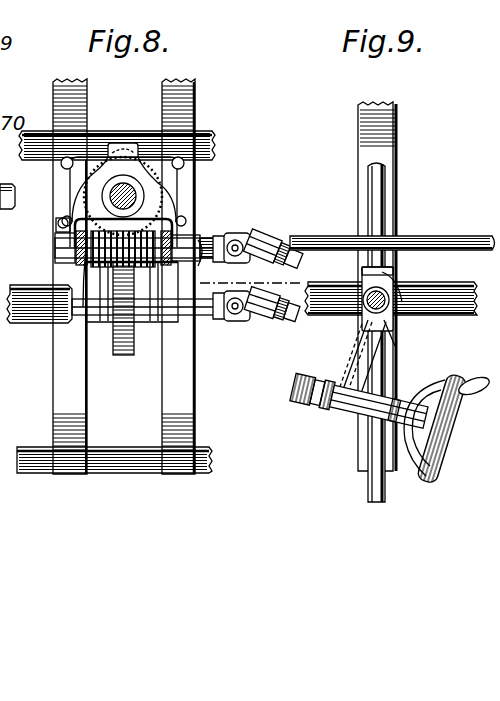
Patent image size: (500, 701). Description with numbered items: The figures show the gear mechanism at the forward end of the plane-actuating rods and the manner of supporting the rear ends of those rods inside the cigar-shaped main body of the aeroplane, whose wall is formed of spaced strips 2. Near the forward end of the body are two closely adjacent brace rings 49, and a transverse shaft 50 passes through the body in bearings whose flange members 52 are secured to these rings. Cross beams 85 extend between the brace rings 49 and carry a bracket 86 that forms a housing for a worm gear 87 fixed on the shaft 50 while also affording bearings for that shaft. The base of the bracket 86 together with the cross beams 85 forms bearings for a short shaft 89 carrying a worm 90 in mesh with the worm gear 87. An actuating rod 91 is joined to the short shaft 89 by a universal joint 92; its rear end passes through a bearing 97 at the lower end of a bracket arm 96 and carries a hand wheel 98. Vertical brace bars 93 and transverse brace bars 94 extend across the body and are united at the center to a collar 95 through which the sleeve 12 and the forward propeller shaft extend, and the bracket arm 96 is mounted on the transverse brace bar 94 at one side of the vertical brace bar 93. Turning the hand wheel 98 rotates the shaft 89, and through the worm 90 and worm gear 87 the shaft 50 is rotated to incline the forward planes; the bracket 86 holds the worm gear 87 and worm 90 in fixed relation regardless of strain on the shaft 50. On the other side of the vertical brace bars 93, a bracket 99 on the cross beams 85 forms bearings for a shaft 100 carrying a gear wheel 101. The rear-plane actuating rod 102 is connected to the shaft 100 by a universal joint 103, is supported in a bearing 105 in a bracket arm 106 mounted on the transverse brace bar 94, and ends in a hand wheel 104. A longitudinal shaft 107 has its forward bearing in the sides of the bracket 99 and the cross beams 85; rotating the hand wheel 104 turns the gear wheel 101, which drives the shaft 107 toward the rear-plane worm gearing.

In FIG. 8, the strips 2 is at (212, 136).
In FIG. 8, the sleeve 12 is at (36, 308).
In FIG. 9, the sleeve 12 is at (391, 299).
In FIG. 8, the brace rings 49 is at (162, 94).
In FIG. 8, the shaft 50 is at (172, 196).
In FIG. 8, the flange members 52 is at (196, 176).
In FIG. 8, the cross beams 85 is at (182, 236).
In FIG. 8, the bracket 86 is at (150, 212).
In FIG. 8, the worm gear 87 is at (96, 183).
In FIG. 8, the short shaft 89 is at (198, 256).
In FIG. 8, the worm 90 is at (58, 223).
In FIG. 9, the actuating rod 91 is at (308, 248).
In FIG. 8, the universal joint 92 is at (250, 240).
In FIG. 9, the vertical brace bars 93 is at (386, 197).
In FIG. 9, the transverse brace bars 94 is at (398, 284).
In FIG. 9, the collar 95 is at (362, 273).
In FIG. 9, the bracket arm 96 is at (366, 330).
In FIG. 9, the bearing 97 is at (342, 420).
In FIG. 9, the hand wheel 98 is at (446, 417).
In FIG. 8, the bracket 99 is at (84, 360).
In FIG. 8, the shaft 100 is at (180, 314).
In FIG. 8, the gear wheel 101 is at (124, 356).
In FIG. 8, the actuating rod 102 is at (280, 322).
In FIG. 9, the actuating rod 102 is at (305, 402).
In FIG. 8, the universal joint 103 is at (246, 300).
In FIG. 9, the hand wheel 104 is at (438, 471).
In FIG. 9, the bearing 105 is at (350, 428).
In FIG. 9, the bracket arm 106 is at (388, 364).
In FIG. 9, the shaft 107 is at (450, 239).